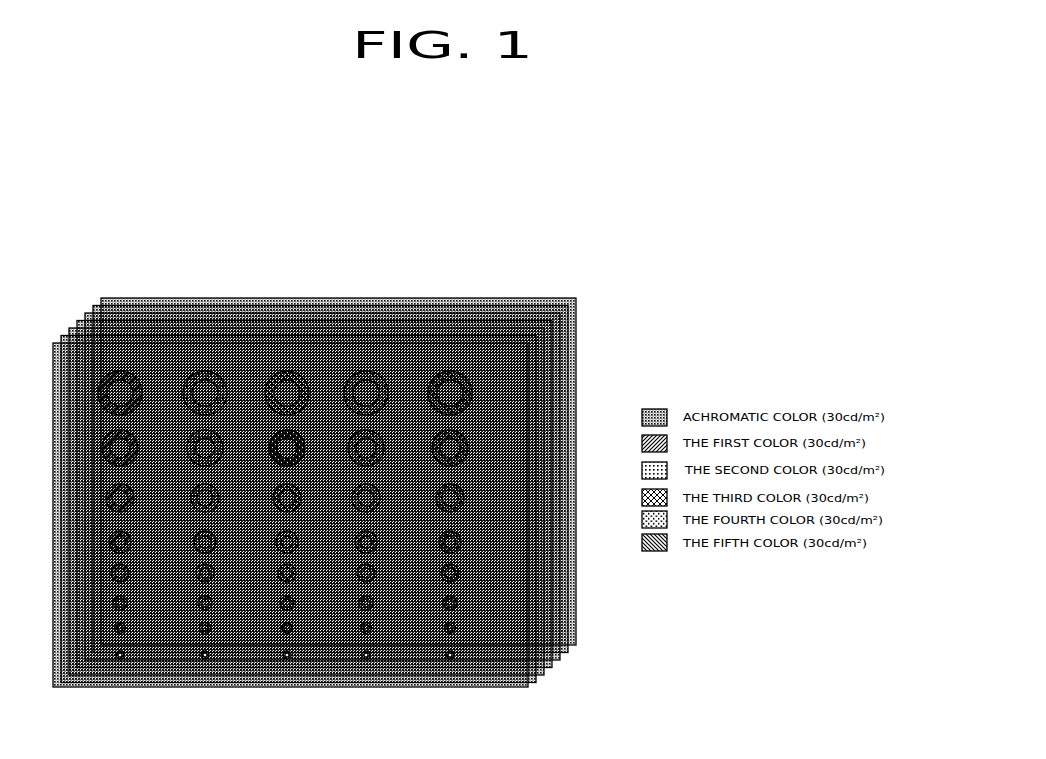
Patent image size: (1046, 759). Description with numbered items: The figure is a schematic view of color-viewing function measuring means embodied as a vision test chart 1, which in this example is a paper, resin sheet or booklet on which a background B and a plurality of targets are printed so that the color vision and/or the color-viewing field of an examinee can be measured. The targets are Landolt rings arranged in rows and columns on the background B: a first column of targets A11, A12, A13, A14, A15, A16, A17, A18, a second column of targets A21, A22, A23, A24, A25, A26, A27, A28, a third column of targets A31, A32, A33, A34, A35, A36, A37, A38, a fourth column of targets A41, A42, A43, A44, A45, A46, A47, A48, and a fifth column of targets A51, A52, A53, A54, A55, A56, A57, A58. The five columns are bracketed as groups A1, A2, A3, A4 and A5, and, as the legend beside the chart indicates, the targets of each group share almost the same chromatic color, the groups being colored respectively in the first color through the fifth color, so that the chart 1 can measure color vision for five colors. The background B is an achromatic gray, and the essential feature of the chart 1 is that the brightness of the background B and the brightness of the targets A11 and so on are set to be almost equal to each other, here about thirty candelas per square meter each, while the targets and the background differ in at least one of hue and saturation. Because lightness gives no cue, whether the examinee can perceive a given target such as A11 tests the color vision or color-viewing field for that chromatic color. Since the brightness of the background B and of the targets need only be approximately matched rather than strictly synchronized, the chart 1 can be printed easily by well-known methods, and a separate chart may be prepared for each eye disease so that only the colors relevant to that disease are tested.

The color-viewing function measuring means (vision test chart) 1 is at (582, 313).
The background B is at (504, 377).
The first color patch column A1 is at (122, 709).
The second color patch column A2 is at (206, 709).
The third color patch column A3 is at (292, 709).
The fourth color patch column A4 is at (376, 709).
The fifth color patch column A5 is at (451, 709).
The target (Landolt ring) A11 is at (102, 381).
The target (Landolt ring) A12 is at (100, 435).
The target (Landolt ring) A13 is at (98, 483).
The target (Landolt ring) A14 is at (99, 527).
The target (Landolt ring) A15 is at (98, 557).
The target (Landolt ring) A16 is at (97, 588).
The target (Landolt ring) A17 is at (97, 614).
The target (Landolt ring) A18 is at (96, 641).
The target (Landolt ring) A21 is at (183, 381).
The target (Landolt ring) A22 is at (184, 435).
The target (Landolt ring) A23 is at (183, 483).
The target (Landolt ring) A24 is at (184, 527).
The target (Landolt ring) A25 is at (183, 557).
The target (Landolt ring) A26 is at (182, 588).
The target (Landolt ring) A27 is at (181, 614).
The target (Landolt ring) A28 is at (180, 641).
The target (Landolt ring) A31 is at (264, 381).
The target (Landolt ring) A32 is at (265, 435).
The target (Landolt ring) A33 is at (264, 483).
The target (Landolt ring) A34 is at (265, 527).
The target (Landolt ring) A35 is at (264, 557).
The target (Landolt ring) A36 is at (264, 588).
The target (Landolt ring) A37 is at (264, 614).
The target (Landolt ring) A38 is at (263, 641).
The target (Landolt ring) A41 is at (345, 381).
The target (Landolt ring) A42 is at (346, 435).
The target (Landolt ring) A43 is at (346, 483).
The target (Landolt ring) A44 is at (345, 527).
The target (Landolt ring) A45 is at (344, 557).
The target (Landolt ring) A46 is at (345, 588).
The target (Landolt ring) A47 is at (344, 614).
The target (Landolt ring) A48 is at (343, 641).
The target (Landolt ring) A51 is at (429, 381).
The target (Landolt ring) A52 is at (430, 435).
The target (Landolt ring) A53 is at (430, 483).
The target (Landolt ring) A54 is at (429, 527).
The target (Landolt ring) A55 is at (429, 557).
The target (Landolt ring) A56 is at (428, 588).
The target (Landolt ring) A57 is at (428, 614).
The target (Landolt ring) A58 is at (427, 641).